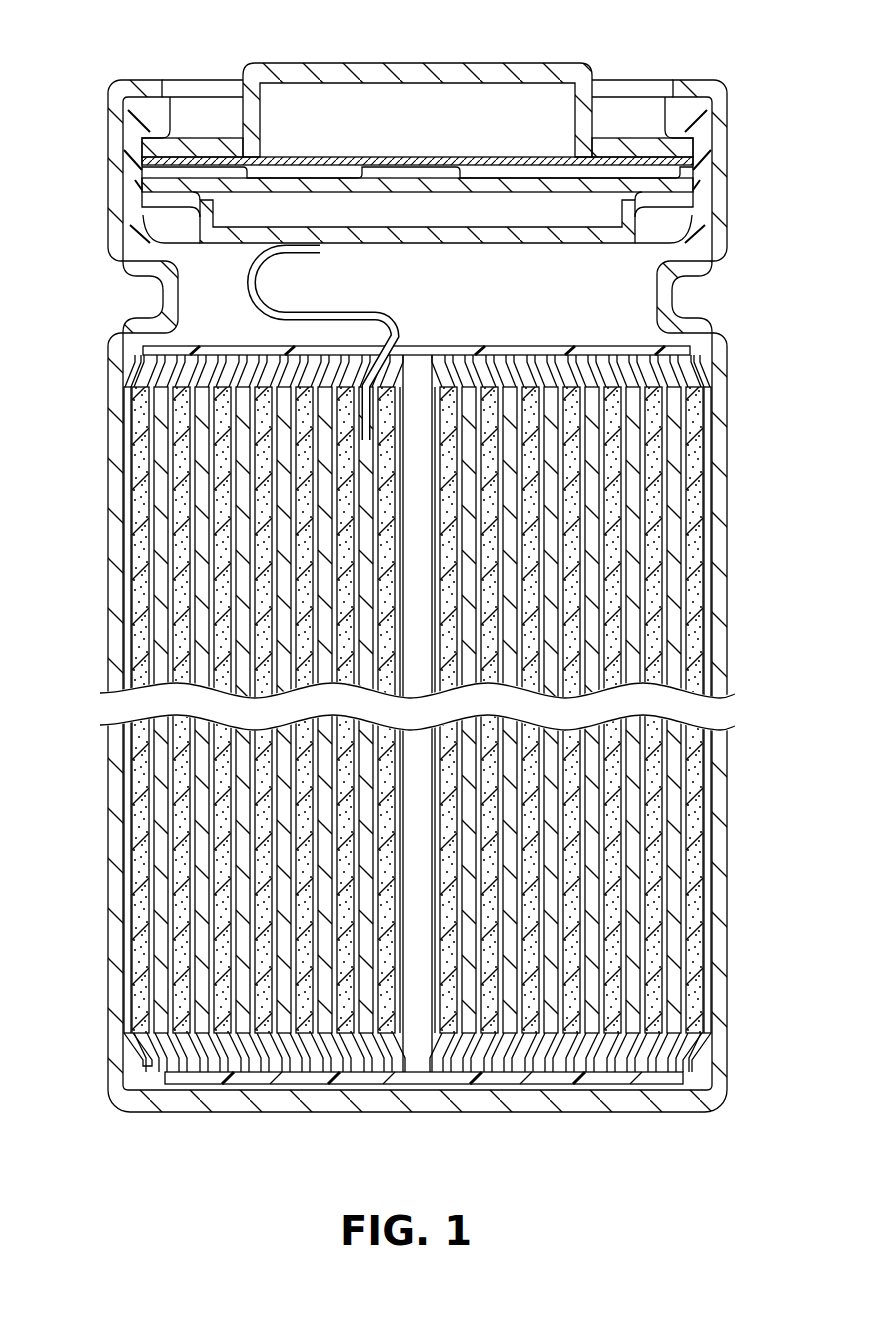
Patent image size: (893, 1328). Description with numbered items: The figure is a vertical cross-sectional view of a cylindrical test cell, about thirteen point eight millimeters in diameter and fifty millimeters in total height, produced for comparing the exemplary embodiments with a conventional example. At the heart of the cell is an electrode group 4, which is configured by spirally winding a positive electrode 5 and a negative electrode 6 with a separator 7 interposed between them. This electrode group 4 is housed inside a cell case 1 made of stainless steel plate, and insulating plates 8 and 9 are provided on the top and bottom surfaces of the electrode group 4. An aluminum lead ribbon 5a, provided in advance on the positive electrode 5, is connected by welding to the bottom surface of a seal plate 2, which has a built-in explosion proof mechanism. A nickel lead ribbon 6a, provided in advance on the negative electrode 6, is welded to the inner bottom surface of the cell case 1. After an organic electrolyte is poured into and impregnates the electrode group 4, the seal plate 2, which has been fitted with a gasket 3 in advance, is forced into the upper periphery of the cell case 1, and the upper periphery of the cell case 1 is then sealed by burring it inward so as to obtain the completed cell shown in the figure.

The cell case 1 is at (115, 358).
The seal plate 2 is at (418, 73).
The gasket 3 is at (700, 128).
The electrode group 4 is at (178, 514).
The positive electrode 5 is at (667, 601).
The aluminum lead ribbon 5a is at (252, 260).
The negative electrode 6 is at (140, 888).
The nickel lead ribbon 6a is at (693, 1073).
The separator 7 is at (142, 1063).
The insulating plate 8 is at (205, 1080).
The insulating plate 9 is at (594, 347).